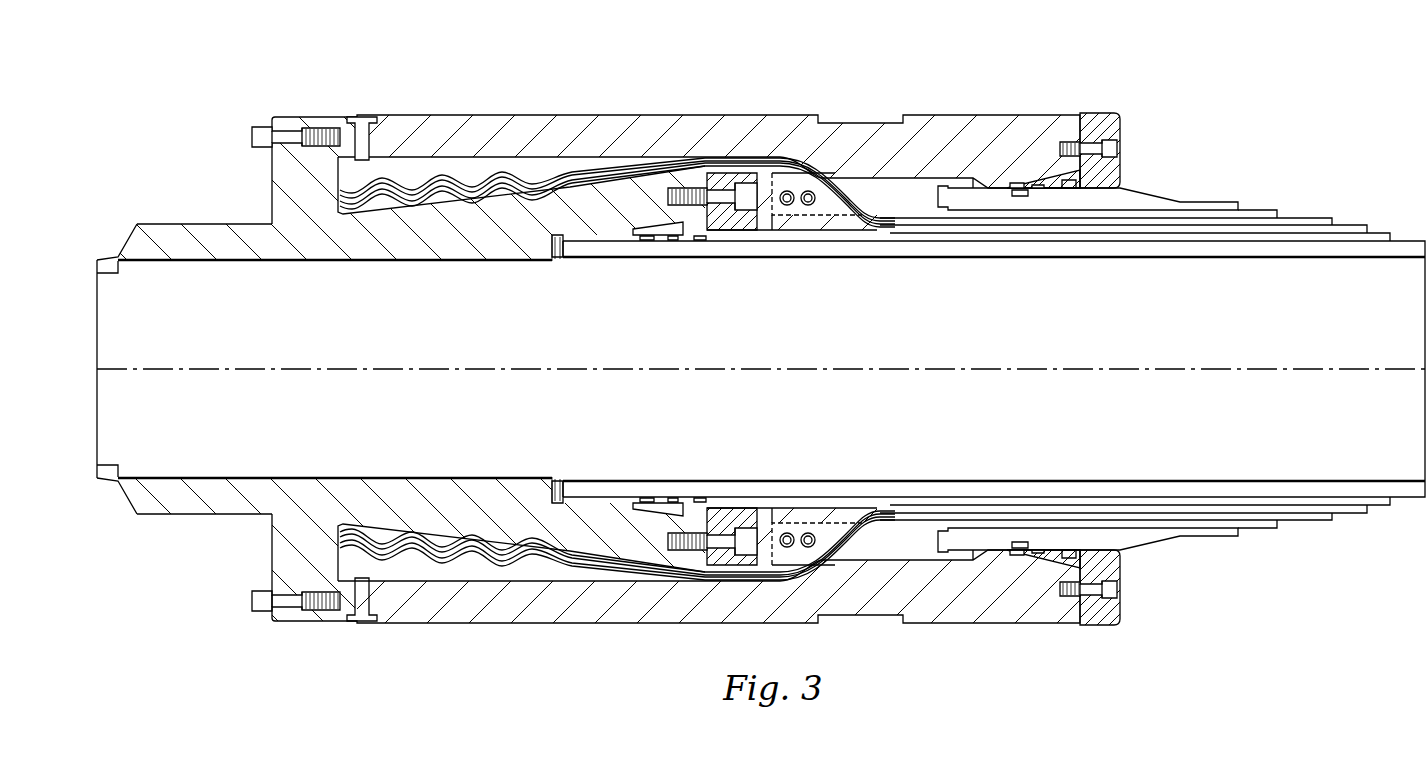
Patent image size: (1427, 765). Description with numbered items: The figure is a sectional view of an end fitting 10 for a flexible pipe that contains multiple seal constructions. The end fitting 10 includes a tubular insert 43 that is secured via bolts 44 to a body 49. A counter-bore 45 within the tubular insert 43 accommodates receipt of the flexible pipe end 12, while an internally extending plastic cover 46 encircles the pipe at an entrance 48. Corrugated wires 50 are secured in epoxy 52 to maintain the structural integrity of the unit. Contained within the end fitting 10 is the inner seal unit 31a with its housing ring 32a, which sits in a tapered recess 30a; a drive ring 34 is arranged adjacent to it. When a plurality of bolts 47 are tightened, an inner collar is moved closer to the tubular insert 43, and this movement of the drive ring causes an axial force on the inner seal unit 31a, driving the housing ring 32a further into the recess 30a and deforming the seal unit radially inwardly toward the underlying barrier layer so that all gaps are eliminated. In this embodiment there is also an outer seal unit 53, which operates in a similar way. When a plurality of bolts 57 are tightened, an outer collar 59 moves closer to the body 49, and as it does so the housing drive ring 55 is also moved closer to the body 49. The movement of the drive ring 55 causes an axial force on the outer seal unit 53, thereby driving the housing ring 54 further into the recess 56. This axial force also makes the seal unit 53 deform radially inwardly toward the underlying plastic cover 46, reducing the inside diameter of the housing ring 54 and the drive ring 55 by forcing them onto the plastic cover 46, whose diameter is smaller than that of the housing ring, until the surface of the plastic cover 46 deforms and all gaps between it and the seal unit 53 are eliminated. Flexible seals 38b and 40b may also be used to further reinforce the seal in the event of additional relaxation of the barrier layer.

The end fitting 10 is at (416, 109).
The flexible pipe end 12 is at (1349, 195).
The tapered recess 30a is at (690, 229).
The inner seal unit 31a is at (641, 246).
The housing ring 32a is at (680, 242).
The retaining element 34 is at (700, 242).
The flexible seal 38b is at (1040, 192).
The flexible seal 40b is at (1015, 184).
The tubular insert 43 is at (205, 223).
The bolts 44 is at (322, 128).
The counter-bore 45 is at (552, 250).
The plastic cover 46 is at (1207, 201).
The bolts 47 is at (667, 186).
The entrance 48 is at (1122, 186).
The body 49 is at (622, 627).
The corrugated wires 50 is at (497, 172).
The epoxy 52 is at (573, 178).
The outer seal unit 53 is at (1040, 182).
The housing ring 54 is at (1020, 192).
The housing drive ring 55 is at (1070, 190).
The recess 56 is at (1058, 170).
The bolts 57 is at (1098, 602).
The outer collar 59 is at (1124, 608).